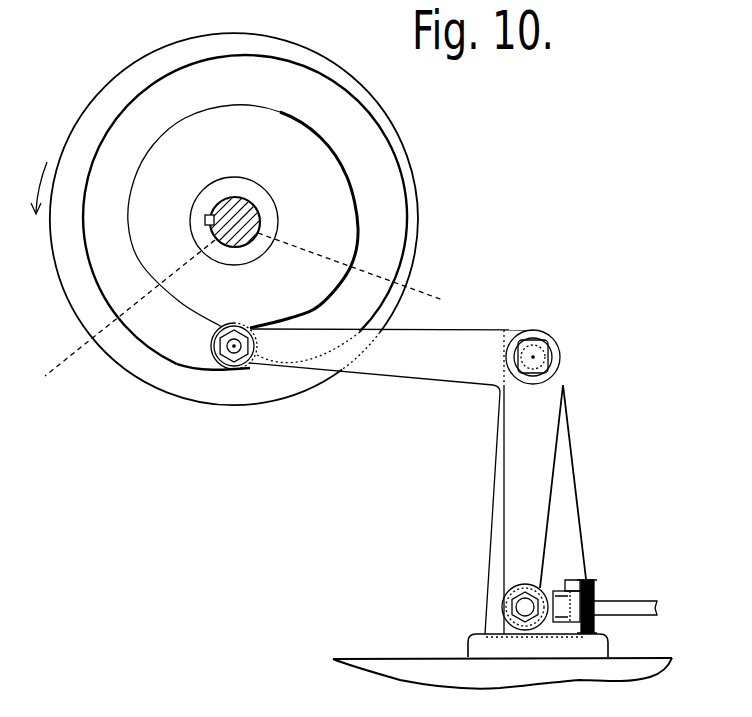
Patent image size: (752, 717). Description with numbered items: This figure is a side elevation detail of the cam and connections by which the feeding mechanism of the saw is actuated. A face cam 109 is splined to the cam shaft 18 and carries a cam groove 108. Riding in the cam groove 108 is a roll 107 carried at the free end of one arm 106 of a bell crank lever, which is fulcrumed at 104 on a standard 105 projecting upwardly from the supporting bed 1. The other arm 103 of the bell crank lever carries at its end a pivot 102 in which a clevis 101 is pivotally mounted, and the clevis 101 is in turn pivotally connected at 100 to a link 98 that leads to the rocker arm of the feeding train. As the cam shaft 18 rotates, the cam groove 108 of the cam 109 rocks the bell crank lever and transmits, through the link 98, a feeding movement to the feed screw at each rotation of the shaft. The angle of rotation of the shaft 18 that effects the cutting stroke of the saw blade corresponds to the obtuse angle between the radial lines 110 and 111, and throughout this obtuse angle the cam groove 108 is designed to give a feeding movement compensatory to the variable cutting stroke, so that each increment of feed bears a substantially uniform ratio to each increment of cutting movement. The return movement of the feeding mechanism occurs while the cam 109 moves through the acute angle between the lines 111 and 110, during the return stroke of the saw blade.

The supporting bed 1 is at (632, 664).
The cam shaft 18 is at (260, 220).
The link 98 is at (628, 608).
The pivotal connection 100 is at (583, 580).
The clevis 101 is at (553, 592).
The pivot 102 is at (522, 607).
The arm of bell crank lever 103 is at (545, 480).
The fulcrum 104 is at (536, 356).
The standard 105 is at (565, 442).
The arm of bell crank lever 106 is at (441, 377).
The roll 107 is at (211, 341).
The cam groove 108 is at (383, 235).
The face cam 109 is at (206, 407).
The radial line 110 is at (112, 317).
The radial line 111 is at (369, 274).